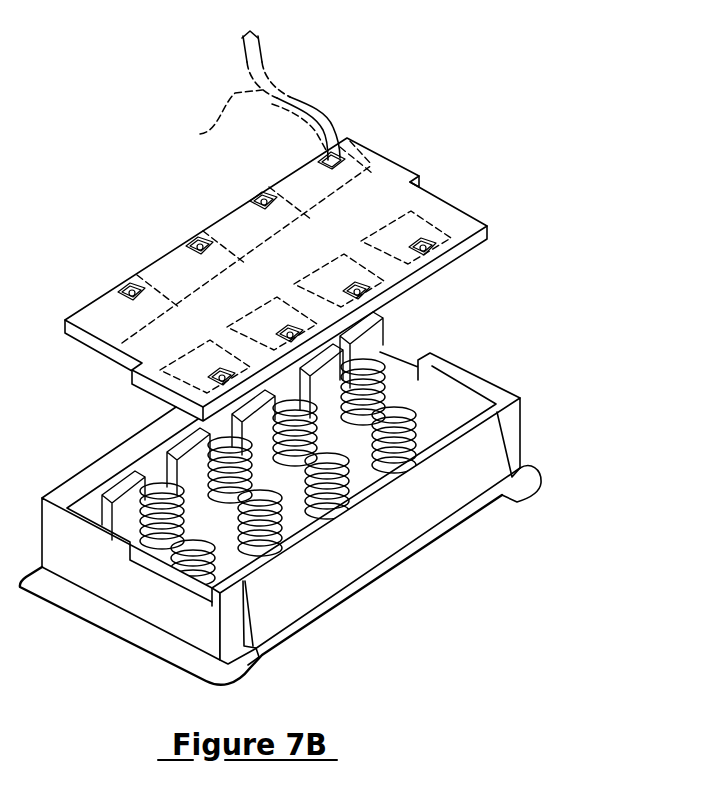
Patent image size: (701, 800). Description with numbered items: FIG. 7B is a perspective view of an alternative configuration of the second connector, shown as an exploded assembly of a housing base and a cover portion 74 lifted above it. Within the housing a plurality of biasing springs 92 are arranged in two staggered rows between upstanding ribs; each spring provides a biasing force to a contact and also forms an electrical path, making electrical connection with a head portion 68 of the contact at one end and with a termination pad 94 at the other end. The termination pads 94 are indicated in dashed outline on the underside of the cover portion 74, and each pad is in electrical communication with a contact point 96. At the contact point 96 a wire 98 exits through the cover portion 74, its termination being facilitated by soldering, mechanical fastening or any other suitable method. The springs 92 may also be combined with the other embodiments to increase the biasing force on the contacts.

The head portion 68 is at (498, 412).
The cover portion 74 is at (378, 202).
The biasing springs 92 is at (370, 358).
The termination pad 94 is at (372, 165).
The contact point 96 is at (336, 147).
The wire 98 is at (200, 134).